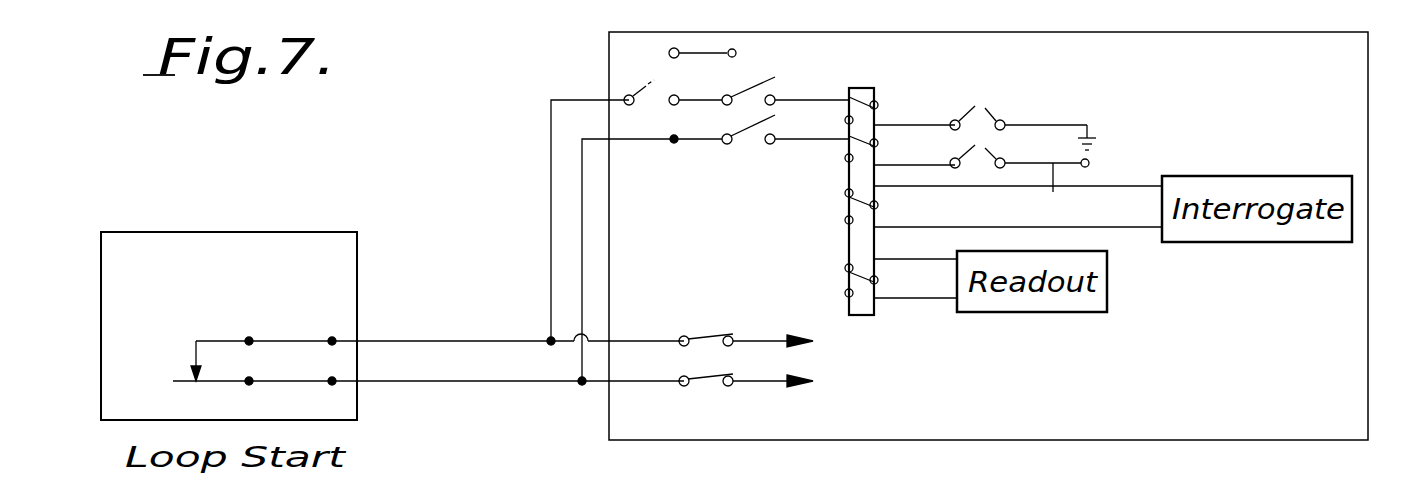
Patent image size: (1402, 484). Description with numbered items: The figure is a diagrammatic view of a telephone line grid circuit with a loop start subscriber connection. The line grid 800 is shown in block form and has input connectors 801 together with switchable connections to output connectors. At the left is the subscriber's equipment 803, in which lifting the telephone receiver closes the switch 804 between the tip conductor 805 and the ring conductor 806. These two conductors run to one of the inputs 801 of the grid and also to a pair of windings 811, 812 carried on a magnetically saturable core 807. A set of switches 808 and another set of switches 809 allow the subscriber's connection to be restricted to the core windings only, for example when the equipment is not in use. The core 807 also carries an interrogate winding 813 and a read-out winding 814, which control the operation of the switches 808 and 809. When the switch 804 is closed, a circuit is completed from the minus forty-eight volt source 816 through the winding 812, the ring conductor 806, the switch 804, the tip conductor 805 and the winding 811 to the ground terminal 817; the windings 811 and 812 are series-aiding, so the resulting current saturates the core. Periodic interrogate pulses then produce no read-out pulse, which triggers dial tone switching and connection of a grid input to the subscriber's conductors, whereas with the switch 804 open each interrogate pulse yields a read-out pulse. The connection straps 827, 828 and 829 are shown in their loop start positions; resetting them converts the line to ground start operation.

The line grid 800 is at (610, 440).
The input connectors 801 is at (750, 340).
The subscriber's equipment 803 is at (306, 212).
The switch 804 is at (192, 353).
The tip conductor 805 is at (520, 322).
The ring conductor 806 is at (512, 384).
The magnetically saturable core 807 is at (860, 94).
The set of switches 808 is at (700, 372).
The set of switches 809 is at (743, 130).
The winding 811 is at (845, 120).
The winding 812 is at (845, 157).
The interrogate winding 813 is at (849, 195).
The read-out winding 814 is at (845, 268).
The minus 48 volt source 816 is at (1053, 192).
The ground terminal 817 is at (1096, 118).
The connection strap 827 is at (664, 76).
The connection strap 828 is at (996, 92).
The connection strap 829 is at (976, 145).